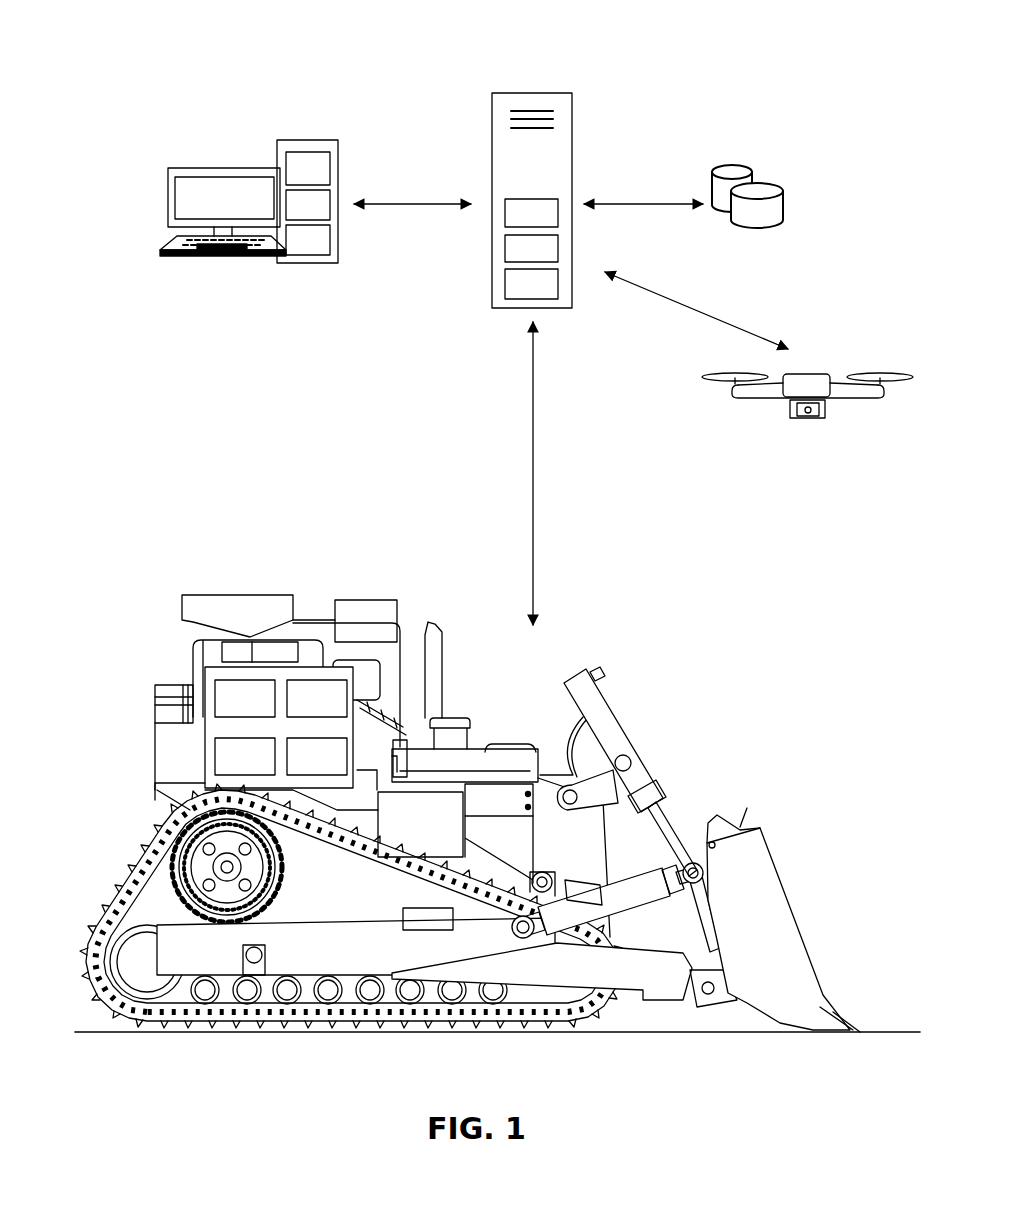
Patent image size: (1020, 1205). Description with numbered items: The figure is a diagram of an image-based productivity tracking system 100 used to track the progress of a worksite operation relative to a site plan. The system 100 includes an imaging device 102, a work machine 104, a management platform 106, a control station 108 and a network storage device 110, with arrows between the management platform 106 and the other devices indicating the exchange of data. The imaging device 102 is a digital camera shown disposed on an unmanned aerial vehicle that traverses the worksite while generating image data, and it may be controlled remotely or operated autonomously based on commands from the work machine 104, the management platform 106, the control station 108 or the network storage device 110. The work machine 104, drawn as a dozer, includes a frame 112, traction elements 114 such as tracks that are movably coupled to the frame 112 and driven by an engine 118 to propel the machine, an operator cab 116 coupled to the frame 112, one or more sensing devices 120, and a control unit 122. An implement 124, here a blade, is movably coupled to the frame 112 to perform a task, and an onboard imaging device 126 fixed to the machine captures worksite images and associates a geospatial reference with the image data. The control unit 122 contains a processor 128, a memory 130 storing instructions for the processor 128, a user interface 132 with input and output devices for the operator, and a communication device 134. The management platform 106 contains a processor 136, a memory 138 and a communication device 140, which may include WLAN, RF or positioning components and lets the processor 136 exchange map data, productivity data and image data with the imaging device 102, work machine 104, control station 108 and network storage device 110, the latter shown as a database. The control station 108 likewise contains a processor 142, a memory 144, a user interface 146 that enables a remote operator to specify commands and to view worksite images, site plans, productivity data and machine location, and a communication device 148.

The image-based productivity tracking system 100 is at (116, 55).
The imaging device 102 is at (800, 422).
The work machine 104 is at (118, 583).
The management platform 106 is at (563, 93).
The control station 108 is at (311, 140).
The network storage device 110 is at (733, 166).
The frame 112 is at (155, 810).
The traction elements 114 is at (86, 962).
The operator cab 116 is at (300, 625).
The engine 118 is at (472, 760).
The sensing devices 120 is at (441, 834).
The control unit 122 is at (212, 745).
The implement 124 is at (780, 876).
The onboard imaging device 126 is at (386, 632).
The processor 128 is at (261, 706).
The memory 130 is at (333, 706).
The user interface 132 is at (261, 764).
The communication device 134 is at (333, 764).
The processor 136 is at (549, 224).
The memory 138 is at (549, 259).
The communication device 140 is at (549, 294).
The processor 142 is at (328, 177).
The memory 144 is at (328, 214).
The user interface 146 is at (150, 178).
The communication device 148 is at (328, 251).